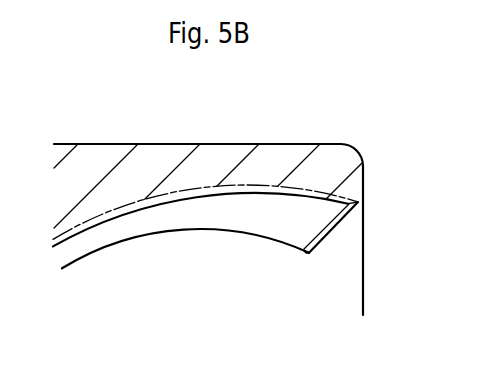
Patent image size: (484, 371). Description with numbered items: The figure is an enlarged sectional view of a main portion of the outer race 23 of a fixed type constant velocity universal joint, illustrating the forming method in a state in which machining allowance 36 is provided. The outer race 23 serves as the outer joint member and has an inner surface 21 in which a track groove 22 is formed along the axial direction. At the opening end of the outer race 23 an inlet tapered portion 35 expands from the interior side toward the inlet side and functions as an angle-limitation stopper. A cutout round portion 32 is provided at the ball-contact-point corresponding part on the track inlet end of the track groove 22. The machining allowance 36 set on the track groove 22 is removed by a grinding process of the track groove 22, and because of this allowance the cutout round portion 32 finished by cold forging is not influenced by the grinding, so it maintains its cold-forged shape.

The inner surface 21 is at (164, 236).
The track groove 22 is at (234, 189).
The outer race 23 is at (192, 142).
The cutout round portion 32 is at (322, 239).
The inlet tapered portion 35 is at (345, 215).
The machining allowance 36 is at (190, 198).